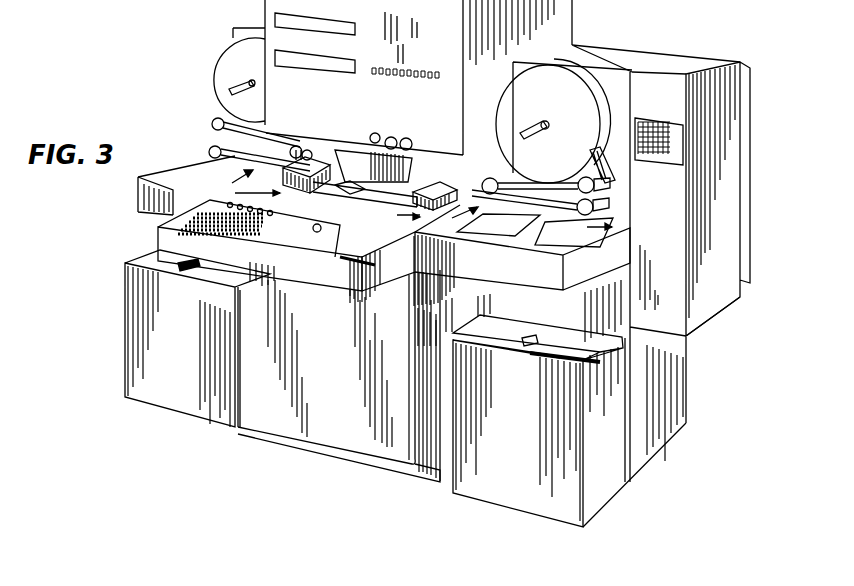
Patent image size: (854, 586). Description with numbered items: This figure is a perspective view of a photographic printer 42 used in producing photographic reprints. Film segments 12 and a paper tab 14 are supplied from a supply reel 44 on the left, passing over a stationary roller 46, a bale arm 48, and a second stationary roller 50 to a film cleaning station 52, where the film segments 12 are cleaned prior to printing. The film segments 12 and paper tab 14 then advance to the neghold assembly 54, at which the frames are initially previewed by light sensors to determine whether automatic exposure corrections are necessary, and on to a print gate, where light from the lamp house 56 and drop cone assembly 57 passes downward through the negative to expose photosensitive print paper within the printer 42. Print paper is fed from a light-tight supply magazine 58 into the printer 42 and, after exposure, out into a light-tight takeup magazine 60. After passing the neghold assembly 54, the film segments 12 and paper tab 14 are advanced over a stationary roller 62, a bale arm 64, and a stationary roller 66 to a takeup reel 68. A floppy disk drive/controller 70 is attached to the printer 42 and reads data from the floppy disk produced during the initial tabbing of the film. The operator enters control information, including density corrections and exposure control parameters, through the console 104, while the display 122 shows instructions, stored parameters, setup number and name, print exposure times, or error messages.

The film segments 12 is at (411, 200).
The paper tab 14 is at (548, 208).
The photographic printer 42 is at (700, 356).
The supply reel 44 is at (217, 64).
The stationary roller 46 is at (211, 124).
The bale arm 48 is at (293, 150).
The stationary roller 50 is at (209, 153).
The film cleaning station 52 is at (304, 148).
The neghold assembly 54 is at (366, 200).
The lamp house 56 is at (369, 119).
The drop cone assembly 57 is at (431, 97).
The light-tight supply magazine 58 is at (158, 330).
The light-tight takeup magazine 60 is at (610, 470).
The stationary roller 62 is at (600, 211).
The bale arm 64 is at (486, 178).
The stationary roller 66 is at (600, 184).
The takeup reel 68 is at (565, 95).
The floppy disk drive/controller 70 is at (717, 131).
The console 104 is at (158, 247).
The display 122 is at (353, 25).